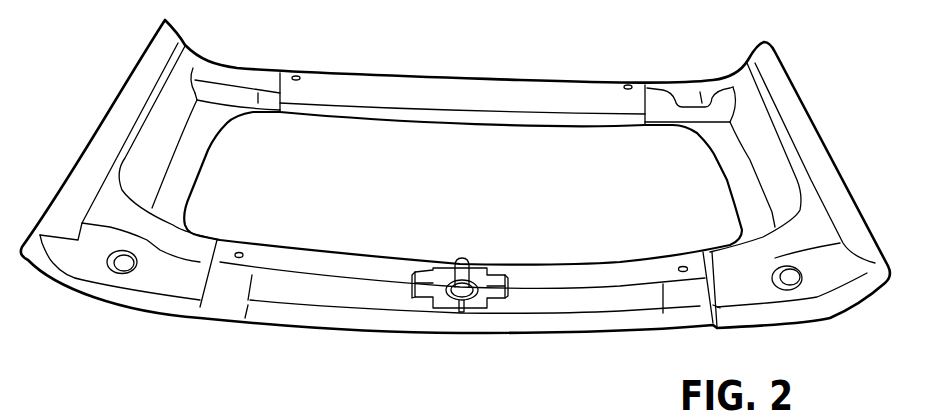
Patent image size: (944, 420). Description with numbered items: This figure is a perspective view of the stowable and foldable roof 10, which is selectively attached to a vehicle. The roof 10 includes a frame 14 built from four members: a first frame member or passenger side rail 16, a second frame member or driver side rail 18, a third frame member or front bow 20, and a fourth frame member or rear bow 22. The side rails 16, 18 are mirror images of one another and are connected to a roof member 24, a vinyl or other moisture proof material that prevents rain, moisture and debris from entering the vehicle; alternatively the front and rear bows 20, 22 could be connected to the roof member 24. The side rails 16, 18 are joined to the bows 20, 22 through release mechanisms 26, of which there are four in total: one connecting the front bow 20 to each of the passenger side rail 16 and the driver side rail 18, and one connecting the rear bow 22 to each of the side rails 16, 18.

The stowable and foldable roof 10 is at (815, 78).
The frame 14 is at (138, 92).
The passenger side rail 16 is at (200, 133).
The driver side rail 18 is at (725, 153).
The front bow 20 is at (377, 100).
The rear bow 22 is at (340, 262).
The roof member 24 is at (516, 194).
The release mechanism 26 is at (297, 76).